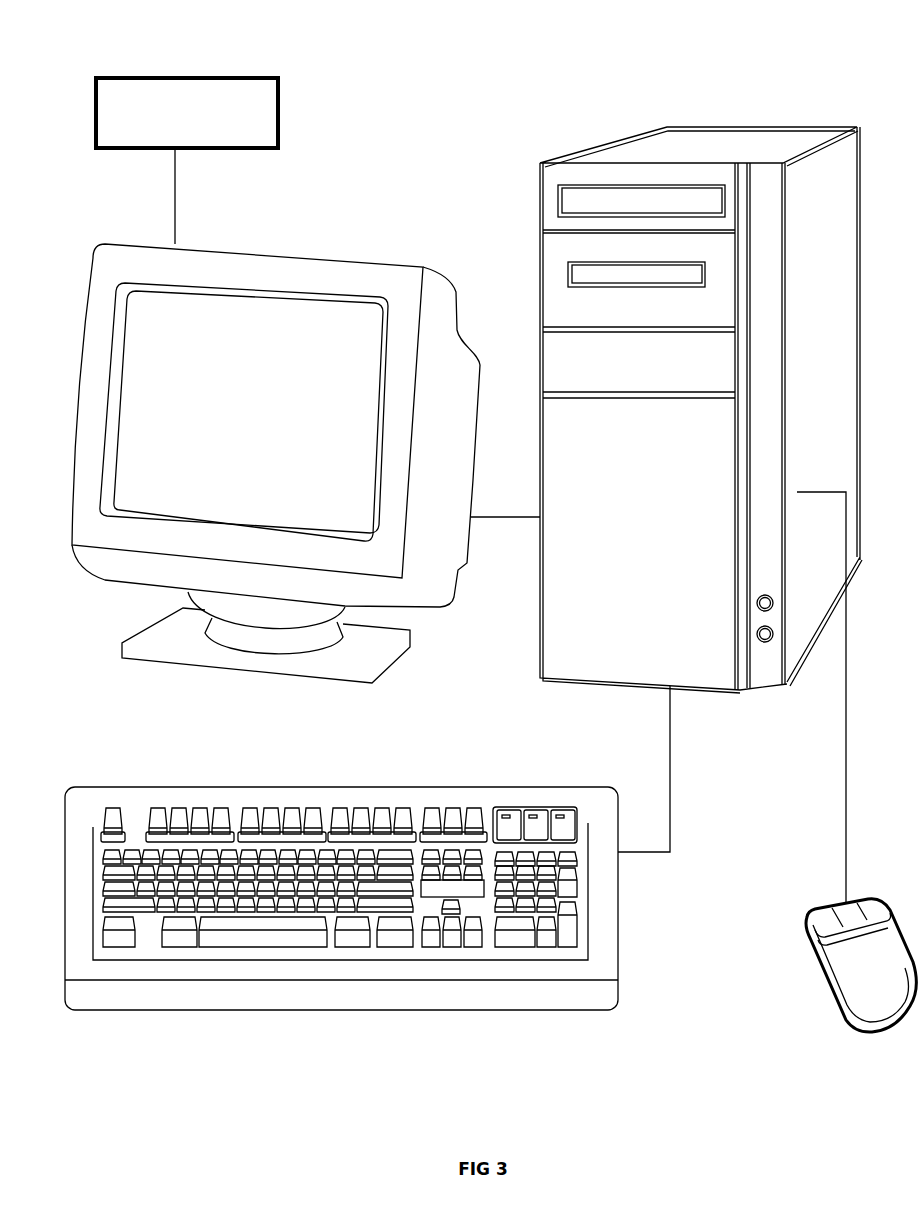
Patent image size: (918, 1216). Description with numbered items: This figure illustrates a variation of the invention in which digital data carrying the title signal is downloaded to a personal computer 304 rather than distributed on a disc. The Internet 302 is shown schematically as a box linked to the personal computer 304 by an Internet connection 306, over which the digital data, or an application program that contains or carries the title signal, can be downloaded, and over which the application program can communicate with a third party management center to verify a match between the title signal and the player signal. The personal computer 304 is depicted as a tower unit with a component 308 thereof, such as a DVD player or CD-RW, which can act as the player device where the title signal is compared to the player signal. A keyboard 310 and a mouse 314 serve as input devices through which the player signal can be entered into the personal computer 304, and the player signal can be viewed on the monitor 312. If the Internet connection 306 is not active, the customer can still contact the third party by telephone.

The Internet 302 is at (278, 103).
The personal computer 304 is at (664, 461).
The Internet connection 306 is at (175, 195).
The component of the personal computer 308 is at (583, 275).
The keyboard 310 is at (328, 1012).
The monitor 312 is at (258, 332).
The mouse 314 is at (847, 1018).